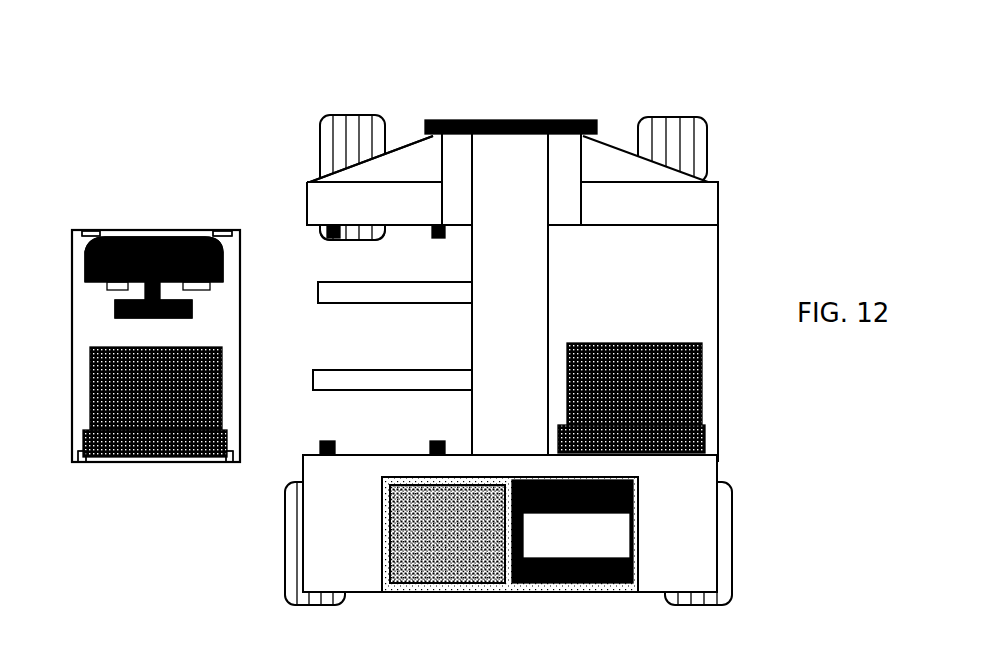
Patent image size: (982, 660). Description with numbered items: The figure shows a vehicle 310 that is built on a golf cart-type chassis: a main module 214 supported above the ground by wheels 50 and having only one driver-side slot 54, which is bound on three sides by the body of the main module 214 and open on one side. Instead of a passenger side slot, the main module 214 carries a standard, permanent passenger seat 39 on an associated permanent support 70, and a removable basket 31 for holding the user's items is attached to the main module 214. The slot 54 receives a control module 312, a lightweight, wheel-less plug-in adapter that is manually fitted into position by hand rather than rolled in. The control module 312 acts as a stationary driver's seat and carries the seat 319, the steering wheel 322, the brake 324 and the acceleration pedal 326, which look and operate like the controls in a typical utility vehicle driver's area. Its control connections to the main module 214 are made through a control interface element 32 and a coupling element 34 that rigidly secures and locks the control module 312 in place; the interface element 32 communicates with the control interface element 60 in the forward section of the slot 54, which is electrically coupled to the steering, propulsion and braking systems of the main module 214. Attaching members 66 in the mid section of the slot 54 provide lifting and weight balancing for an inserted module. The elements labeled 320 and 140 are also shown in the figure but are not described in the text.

The vehicle 310 is at (180, 73).
The control module 312 is at (165, 470).
The seat 319 is at (90, 413).
The head housing 320 is at (80, 262).
The steering wheel 322 is at (115, 310).
The brake 324 is at (110, 291).
The acceleration pedal 326 is at (215, 288).
The control interface element 32 is at (148, 232).
The coupling element 34 is at (88, 230).
The ramp 140 is at (403, 146).
The main module 214 is at (587, 116).
The wheels 50 is at (705, 125).
The permanent support 70 is at (680, 265).
The control interface element 60 is at (367, 224).
The attaching members 66 is at (453, 303).
The driver-side slot 54 is at (378, 450).
The passenger seat 39 is at (702, 375).
The basket 31 is at (487, 580).